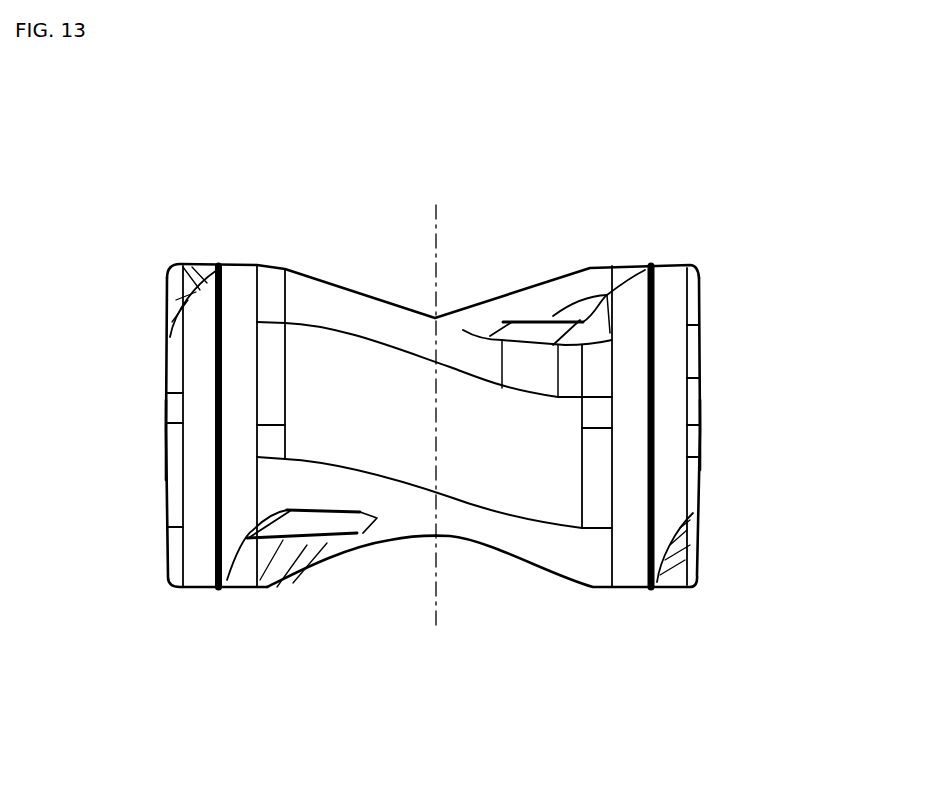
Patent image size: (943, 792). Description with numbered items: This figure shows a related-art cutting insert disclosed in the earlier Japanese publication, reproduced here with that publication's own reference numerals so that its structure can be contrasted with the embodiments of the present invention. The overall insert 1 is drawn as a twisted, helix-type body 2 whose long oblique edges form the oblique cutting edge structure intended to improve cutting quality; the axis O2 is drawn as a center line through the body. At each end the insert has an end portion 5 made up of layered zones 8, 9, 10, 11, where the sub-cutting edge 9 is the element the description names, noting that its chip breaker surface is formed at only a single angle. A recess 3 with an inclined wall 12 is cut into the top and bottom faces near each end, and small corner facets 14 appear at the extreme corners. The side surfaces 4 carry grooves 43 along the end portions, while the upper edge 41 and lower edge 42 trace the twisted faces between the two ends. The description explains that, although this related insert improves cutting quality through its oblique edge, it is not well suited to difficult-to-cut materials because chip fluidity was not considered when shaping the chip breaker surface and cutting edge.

The blade element 1 is at (691, 236).
The main body 2 is at (703, 352).
The recess 3 is at (533, 304).
The side surface 4 is at (163, 443).
The end portion 5 is at (211, 168).
The first layer 8 is at (365, 290).
The sub-cutting edge 9 is at (236, 265).
The third layer 10 is at (272, 265).
The fourth layer 11 is at (200, 265).
The inclined wall 12 is at (565, 306).
The corner facet 14 is at (176, 300).
The upper edge 41 is at (407, 330).
The lower edge 42 is at (457, 440).
The groove 43 is at (196, 497).
The axis O2 is at (436, 222).